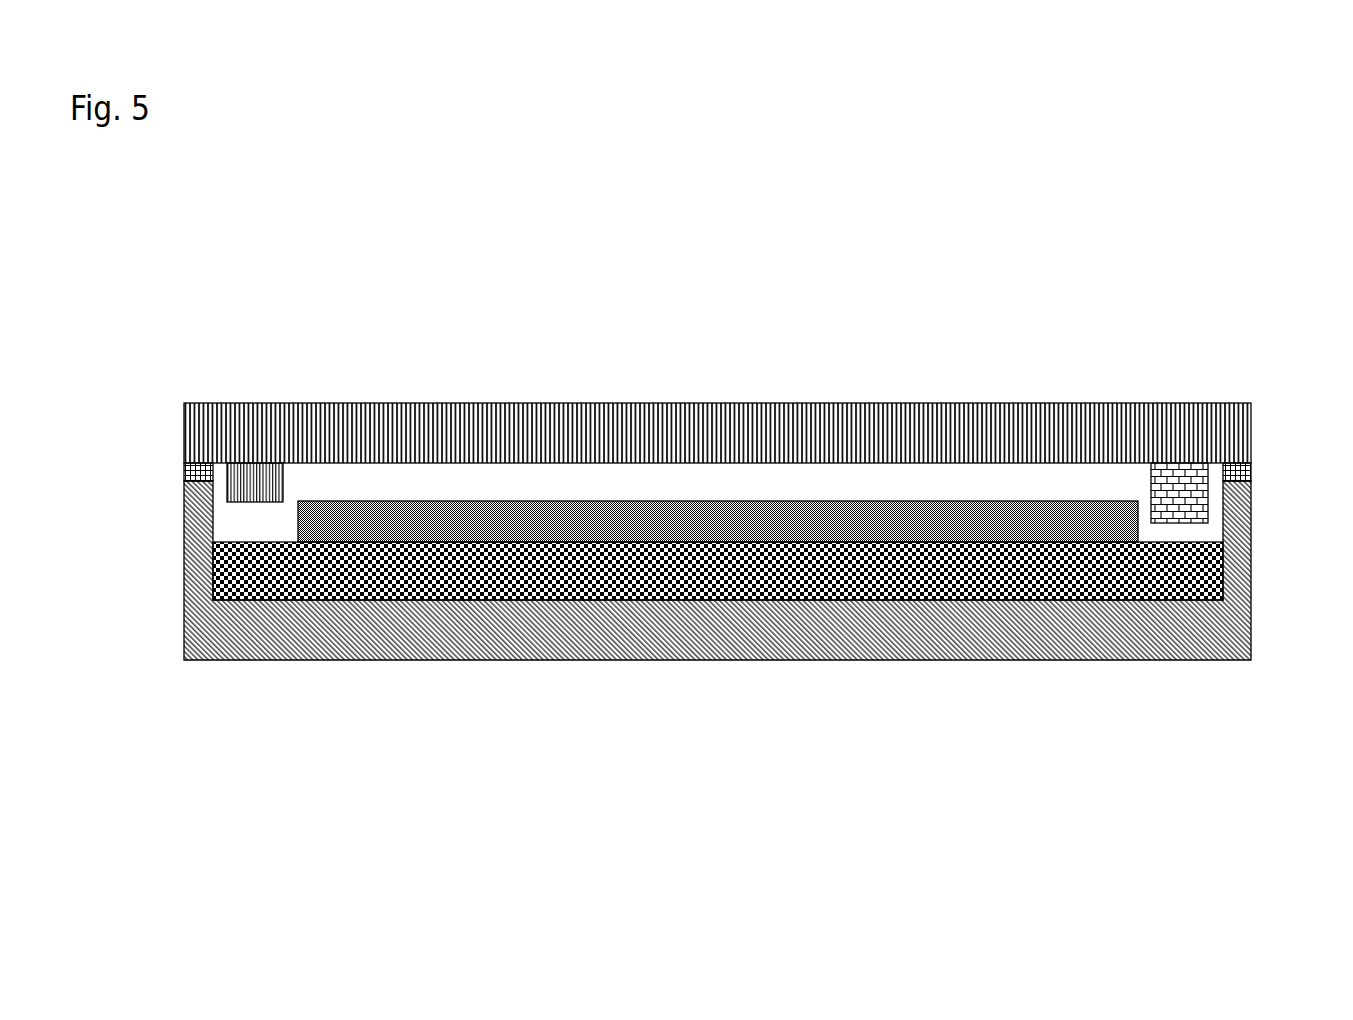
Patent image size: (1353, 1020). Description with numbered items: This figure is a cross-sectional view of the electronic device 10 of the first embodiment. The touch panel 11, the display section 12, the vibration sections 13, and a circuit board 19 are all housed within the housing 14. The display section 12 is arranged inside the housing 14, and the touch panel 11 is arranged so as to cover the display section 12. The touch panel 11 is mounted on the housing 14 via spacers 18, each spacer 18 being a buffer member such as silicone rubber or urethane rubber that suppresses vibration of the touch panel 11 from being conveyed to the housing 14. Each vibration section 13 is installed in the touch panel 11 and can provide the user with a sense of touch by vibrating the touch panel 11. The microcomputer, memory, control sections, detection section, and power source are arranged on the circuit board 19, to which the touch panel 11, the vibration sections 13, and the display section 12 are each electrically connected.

The electronic device 10 is at (638, 388).
The touch panel 11 is at (880, 415).
The display section 12 is at (648, 532).
The vibration section 13 is at (258, 473).
The housing 14 is at (1005, 638).
The spacer 18 is at (192, 470).
The circuit board 19 is at (870, 587).